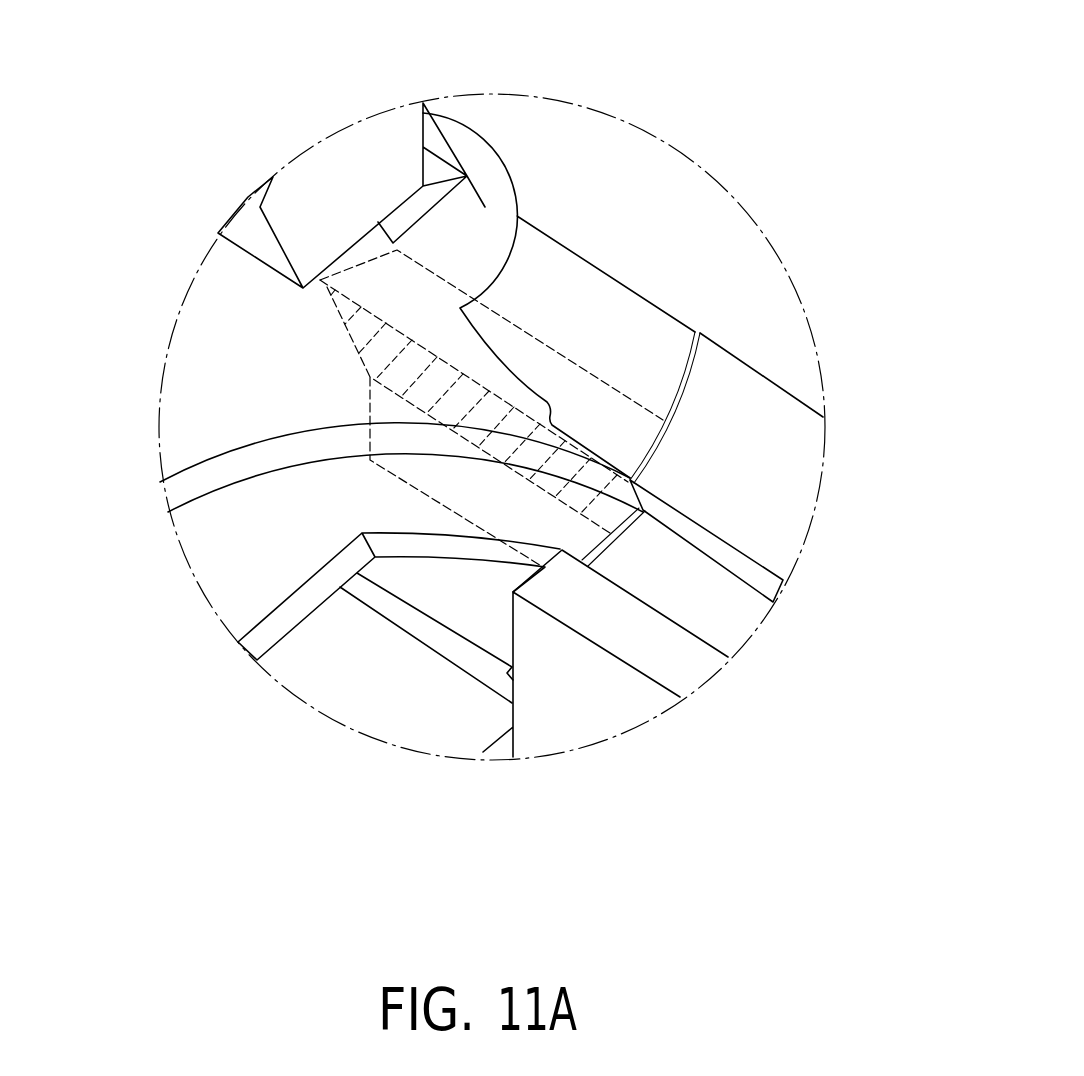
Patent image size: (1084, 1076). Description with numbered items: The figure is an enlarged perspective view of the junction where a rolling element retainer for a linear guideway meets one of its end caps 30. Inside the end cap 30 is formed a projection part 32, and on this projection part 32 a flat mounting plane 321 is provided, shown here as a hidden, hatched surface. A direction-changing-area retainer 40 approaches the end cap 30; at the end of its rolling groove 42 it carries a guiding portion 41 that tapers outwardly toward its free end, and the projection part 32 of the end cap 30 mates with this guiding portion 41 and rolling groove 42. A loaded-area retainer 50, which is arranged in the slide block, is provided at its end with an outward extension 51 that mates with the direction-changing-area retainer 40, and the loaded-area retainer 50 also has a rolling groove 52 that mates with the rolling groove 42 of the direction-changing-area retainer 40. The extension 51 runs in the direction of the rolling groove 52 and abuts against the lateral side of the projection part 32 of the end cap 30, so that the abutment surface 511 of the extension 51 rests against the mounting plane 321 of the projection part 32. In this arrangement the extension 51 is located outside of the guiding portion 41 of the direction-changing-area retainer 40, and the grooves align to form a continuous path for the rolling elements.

The end cap 30 is at (352, 162).
The projection part 32 is at (565, 257).
The mounting plane 321 is at (490, 405).
The direction-changing-area retainer 40 is at (245, 408).
The guiding portion 41 is at (537, 518).
The rolling groove 42 is at (348, 513).
The loaded-area retainer 50 is at (743, 495).
The extension 51 is at (520, 360).
The abutment surface 511 is at (642, 408).
The rolling groove 52 is at (718, 612).